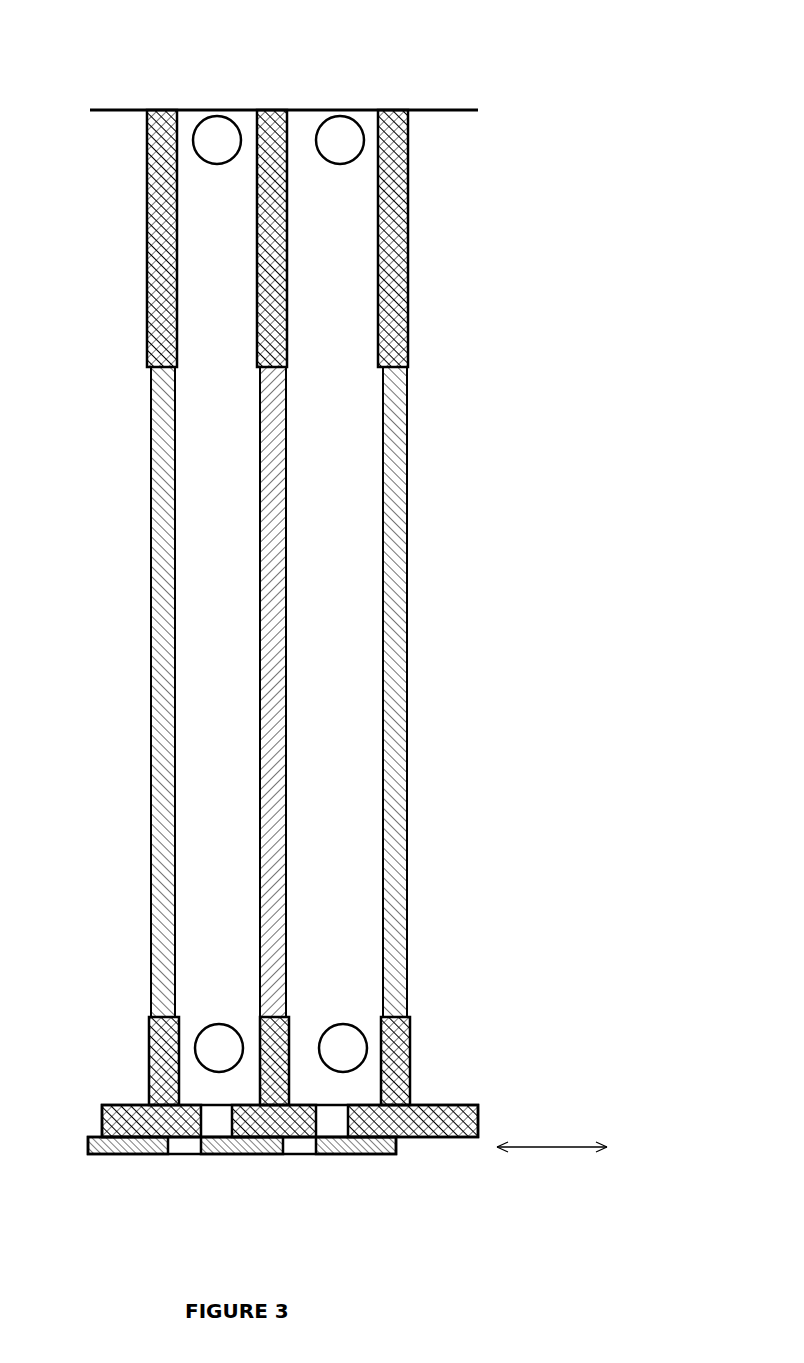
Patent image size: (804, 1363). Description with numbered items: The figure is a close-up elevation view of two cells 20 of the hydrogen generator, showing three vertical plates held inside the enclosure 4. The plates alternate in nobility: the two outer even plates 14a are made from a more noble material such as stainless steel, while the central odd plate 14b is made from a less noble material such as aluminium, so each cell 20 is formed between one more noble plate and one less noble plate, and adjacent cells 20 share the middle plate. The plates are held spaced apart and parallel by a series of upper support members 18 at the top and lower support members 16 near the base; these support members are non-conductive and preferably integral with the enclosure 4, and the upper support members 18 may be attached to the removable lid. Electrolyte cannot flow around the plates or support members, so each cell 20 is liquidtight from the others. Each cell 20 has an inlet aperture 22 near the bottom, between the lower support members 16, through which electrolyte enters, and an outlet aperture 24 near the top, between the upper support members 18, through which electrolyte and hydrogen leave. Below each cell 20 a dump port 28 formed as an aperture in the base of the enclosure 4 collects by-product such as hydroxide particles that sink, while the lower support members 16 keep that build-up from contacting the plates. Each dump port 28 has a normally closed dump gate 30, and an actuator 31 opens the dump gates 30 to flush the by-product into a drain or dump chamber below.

The enclosure 4 is at (103, 1105).
The even plate 14a is at (408, 605).
The odd plate 14b is at (287, 708).
The lower support member 16 is at (413, 1038).
The upper support member 18 is at (178, 292).
The cell 20 is at (213, 897).
The inlet aperture 22 is at (237, 1030).
The outlet aperture 24 is at (217, 140).
The dump port 28 is at (333, 1127).
The dump gate 30 is at (365, 1154).
The actuator 31 is at (552, 1136).